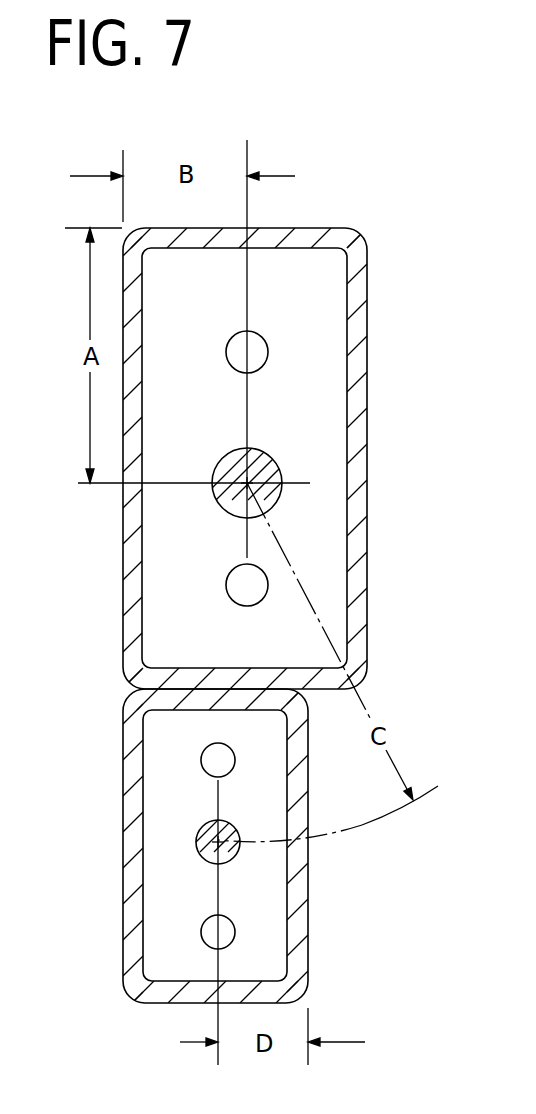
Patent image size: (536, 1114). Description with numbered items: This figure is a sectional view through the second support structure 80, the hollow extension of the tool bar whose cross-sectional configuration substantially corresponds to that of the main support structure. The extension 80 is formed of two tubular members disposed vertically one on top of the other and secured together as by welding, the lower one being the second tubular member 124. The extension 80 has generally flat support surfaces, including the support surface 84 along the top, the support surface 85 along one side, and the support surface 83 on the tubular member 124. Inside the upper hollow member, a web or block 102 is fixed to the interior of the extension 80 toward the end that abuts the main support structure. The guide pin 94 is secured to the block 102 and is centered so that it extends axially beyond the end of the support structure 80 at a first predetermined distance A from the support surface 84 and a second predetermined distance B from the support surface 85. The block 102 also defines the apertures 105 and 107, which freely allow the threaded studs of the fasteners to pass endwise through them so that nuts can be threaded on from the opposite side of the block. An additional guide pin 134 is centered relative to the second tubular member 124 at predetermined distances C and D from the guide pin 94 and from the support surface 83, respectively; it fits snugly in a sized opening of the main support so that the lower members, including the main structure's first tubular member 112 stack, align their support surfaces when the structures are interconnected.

The second support structure 80 is at (380, 240).
The support surface 84 is at (308, 228).
The web or block 102 is at (320, 348).
The first tubular member 112 is at (140, 544).
The aperture 105 is at (257, 345).
The guide pin 94 is at (237, 467).
The aperture 107 is at (243, 590).
The second tubular member 124 is at (123, 893).
The support surface 85 is at (123, 758).
The support surface 83 is at (308, 888).
The additional guide pin 134 is at (210, 850).